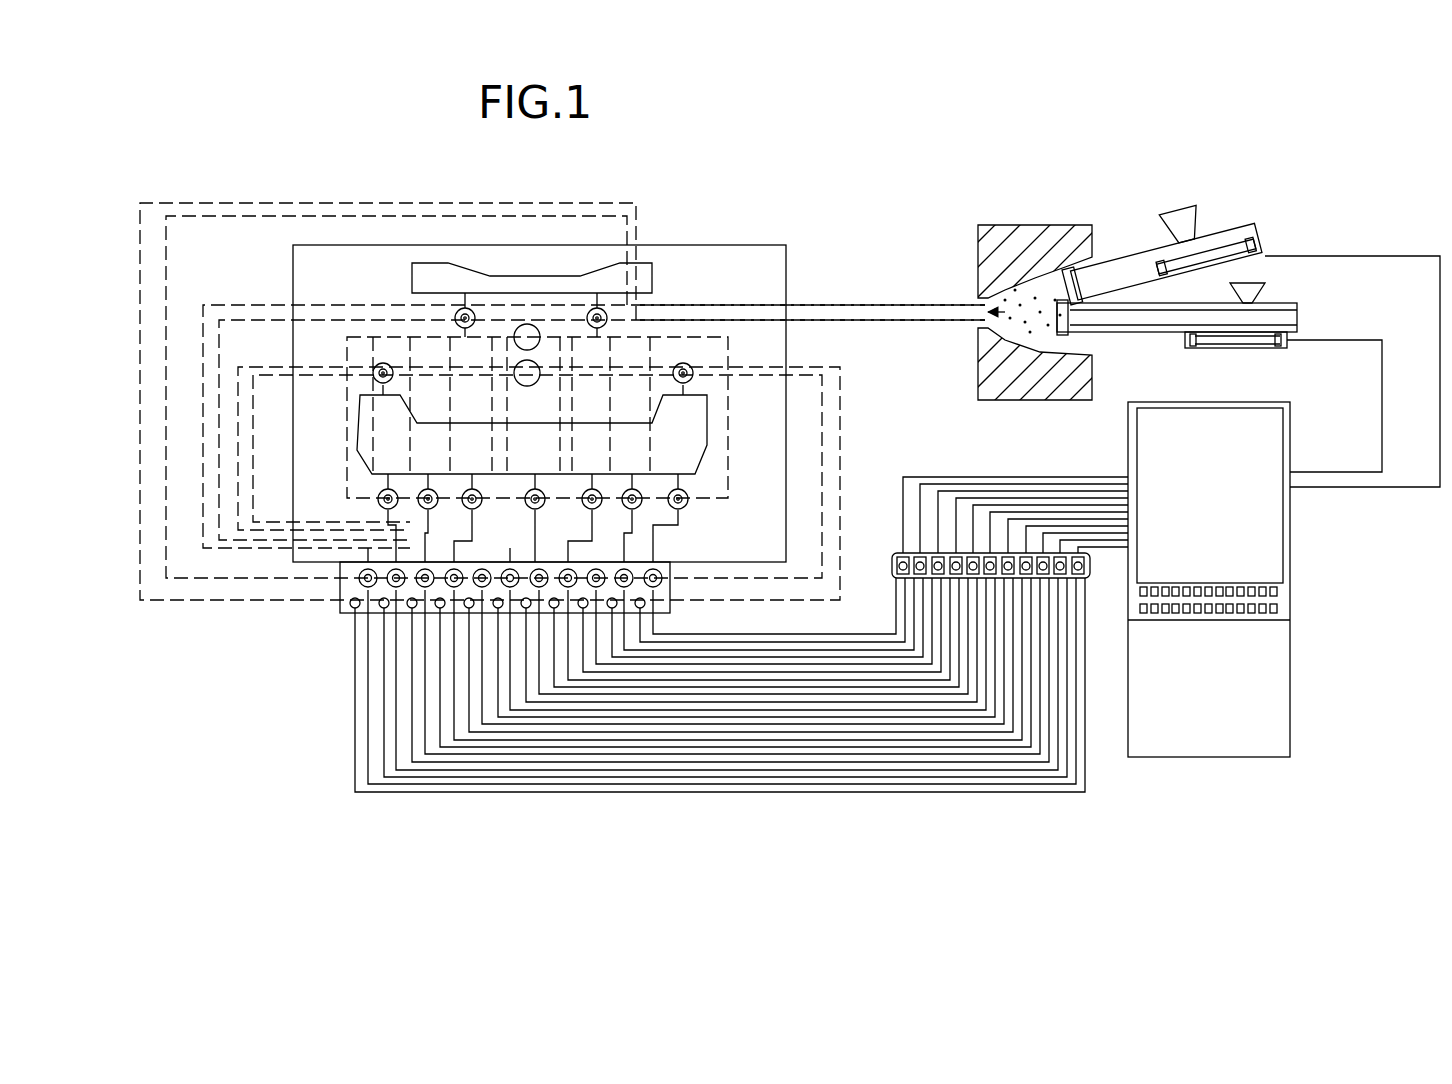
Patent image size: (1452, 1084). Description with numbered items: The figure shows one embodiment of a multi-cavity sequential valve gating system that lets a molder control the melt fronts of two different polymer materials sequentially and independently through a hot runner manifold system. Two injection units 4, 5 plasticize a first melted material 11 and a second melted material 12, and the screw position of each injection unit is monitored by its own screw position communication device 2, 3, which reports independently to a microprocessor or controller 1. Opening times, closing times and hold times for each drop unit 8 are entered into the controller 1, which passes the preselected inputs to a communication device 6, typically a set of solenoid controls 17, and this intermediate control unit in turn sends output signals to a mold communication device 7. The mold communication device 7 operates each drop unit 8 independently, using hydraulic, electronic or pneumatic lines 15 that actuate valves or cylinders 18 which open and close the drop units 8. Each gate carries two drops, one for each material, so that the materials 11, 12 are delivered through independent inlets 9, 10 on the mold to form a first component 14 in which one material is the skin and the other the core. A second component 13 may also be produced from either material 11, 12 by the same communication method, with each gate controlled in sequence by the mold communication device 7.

The controller 1 is at (1296, 540).
The screw position communication device 2 is at (1272, 247).
The screw position communication device 3 is at (1285, 358).
The injection unit 4 is at (1312, 307).
The injection unit 5 is at (1106, 247).
The communication device 6 is at (882, 546).
The mold communication device 7 is at (332, 618).
The drop unit 8 is at (376, 494).
The inlet 9 is at (565, 312).
The inlet 10 is at (518, 386).
The first melted material 11 is at (882, 300).
The second melted material 12 is at (850, 318).
The second component 13 is at (404, 278).
The first component 14 is at (702, 447).
The hydraulic, electronic or pneumatic lines 15 is at (242, 578).
The solenoid controls 17 is at (1090, 582).
The valves or cylinders 18 is at (683, 362).